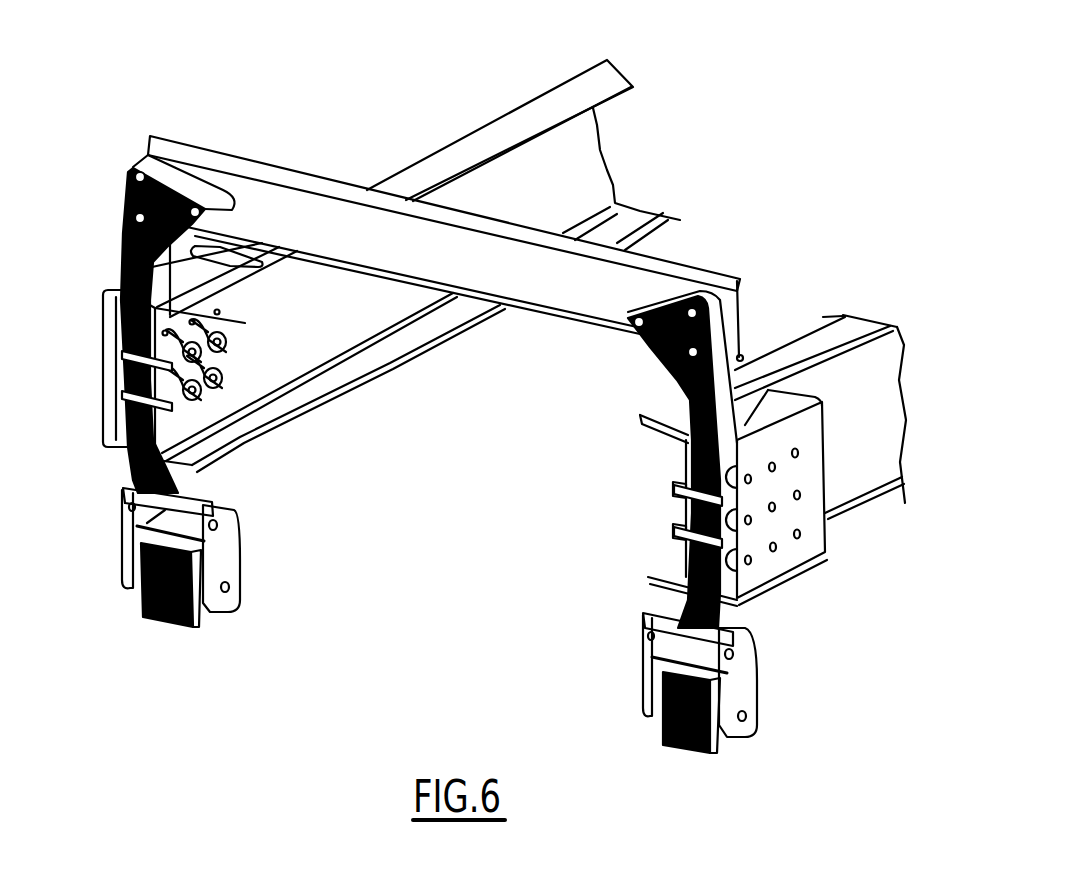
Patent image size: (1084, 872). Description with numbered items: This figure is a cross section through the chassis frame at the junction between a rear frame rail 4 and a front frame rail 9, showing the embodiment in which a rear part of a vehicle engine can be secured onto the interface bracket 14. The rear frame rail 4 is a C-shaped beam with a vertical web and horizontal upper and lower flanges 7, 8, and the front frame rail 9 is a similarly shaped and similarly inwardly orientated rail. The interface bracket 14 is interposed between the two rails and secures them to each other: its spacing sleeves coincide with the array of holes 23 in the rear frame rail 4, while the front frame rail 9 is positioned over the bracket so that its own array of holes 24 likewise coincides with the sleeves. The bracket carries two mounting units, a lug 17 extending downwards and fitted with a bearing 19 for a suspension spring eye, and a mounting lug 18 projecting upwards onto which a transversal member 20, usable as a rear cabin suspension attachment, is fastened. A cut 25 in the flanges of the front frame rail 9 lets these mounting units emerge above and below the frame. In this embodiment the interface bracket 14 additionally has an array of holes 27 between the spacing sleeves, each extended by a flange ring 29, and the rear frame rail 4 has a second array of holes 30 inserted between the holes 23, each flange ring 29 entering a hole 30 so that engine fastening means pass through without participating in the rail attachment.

The rear frame rail 4 is at (600, 147).
The upper flange 7 is at (570, 105).
The lower flange 8 is at (640, 235).
The front frame rail 9 is at (117, 420).
The interface bracket 14 is at (125, 335).
The lug 17 is at (135, 457).
The mounting lug 18 is at (124, 262).
The bearing 19 is at (123, 537).
The transversal member 20 is at (233, 163).
The array of holes 23 is at (217, 312).
The array of holes 24 is at (803, 535).
The cut 25 is at (743, 423).
The array of holes 27 is at (130, 360).
The flange ring 29 is at (222, 377).
The second array of holes 30 is at (677, 484).